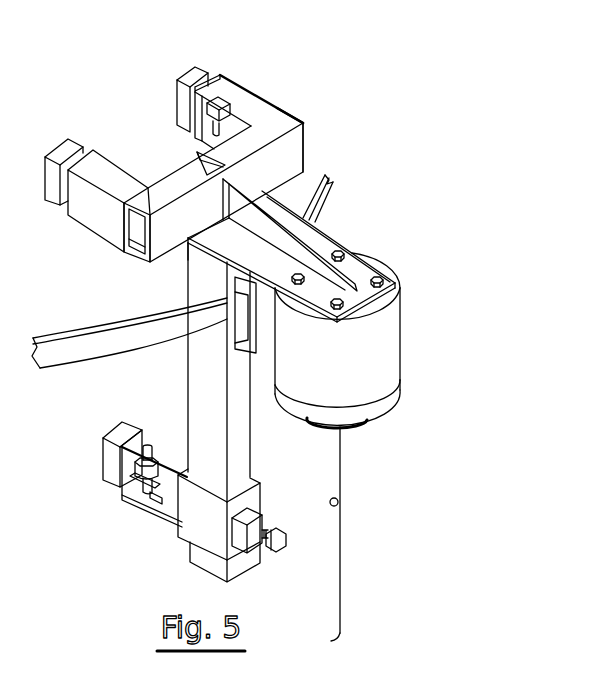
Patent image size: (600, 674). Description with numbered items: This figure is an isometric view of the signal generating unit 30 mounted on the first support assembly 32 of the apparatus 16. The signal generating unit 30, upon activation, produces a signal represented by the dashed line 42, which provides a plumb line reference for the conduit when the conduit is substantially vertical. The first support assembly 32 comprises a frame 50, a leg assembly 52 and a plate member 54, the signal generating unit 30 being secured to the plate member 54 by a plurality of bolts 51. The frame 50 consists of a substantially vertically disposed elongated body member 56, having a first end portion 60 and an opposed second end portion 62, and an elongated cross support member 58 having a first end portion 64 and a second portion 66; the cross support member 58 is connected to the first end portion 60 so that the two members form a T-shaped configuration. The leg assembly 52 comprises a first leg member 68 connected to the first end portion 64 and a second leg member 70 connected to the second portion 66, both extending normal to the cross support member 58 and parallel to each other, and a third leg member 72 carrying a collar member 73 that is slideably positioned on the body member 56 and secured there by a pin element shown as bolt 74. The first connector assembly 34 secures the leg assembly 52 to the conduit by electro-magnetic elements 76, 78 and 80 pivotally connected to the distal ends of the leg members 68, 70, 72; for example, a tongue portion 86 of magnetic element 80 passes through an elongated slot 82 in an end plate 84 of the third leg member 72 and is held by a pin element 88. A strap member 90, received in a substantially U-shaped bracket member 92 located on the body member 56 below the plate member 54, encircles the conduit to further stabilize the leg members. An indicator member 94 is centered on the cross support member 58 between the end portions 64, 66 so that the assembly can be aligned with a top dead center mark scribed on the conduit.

The apparatus 16 is at (231, 324).
The signal generating unit 30 is at (403, 333).
The first support assembly 32 is at (311, 119).
The first connector assembly 34 is at (130, 247).
The dashed line 42 is at (339, 500).
The frame 50 is at (187, 313).
The bolts 51 is at (341, 256).
The leg assembly 52 is at (186, 294).
The plate member 54 is at (329, 243).
The body member 56 is at (248, 458).
The cross support member 58 is at (297, 162).
The first end portion 60 is at (203, 268).
The second end portion 62 is at (193, 552).
The first end portion 64 is at (150, 190).
The second portion 66 is at (260, 108).
The first leg member 68 is at (78, 193).
The second leg member 70 is at (231, 87).
The third leg member 72 is at (155, 456).
The collar member 73 is at (212, 543).
The bolt 74 is at (273, 556).
The electro-magnetic element 76 is at (47, 168).
The electro-magnetic element 78 is at (190, 63).
The electro-magnetic element 80 is at (110, 460).
The elongated slot 82 is at (132, 488).
The end plate 84 is at (134, 464).
The tongue portion 86 is at (157, 497).
The pin element 88 is at (151, 446).
The strap member 90 is at (322, 205).
The U-shaped bracket member 92 is at (257, 347).
The indicator member 94 is at (227, 161).